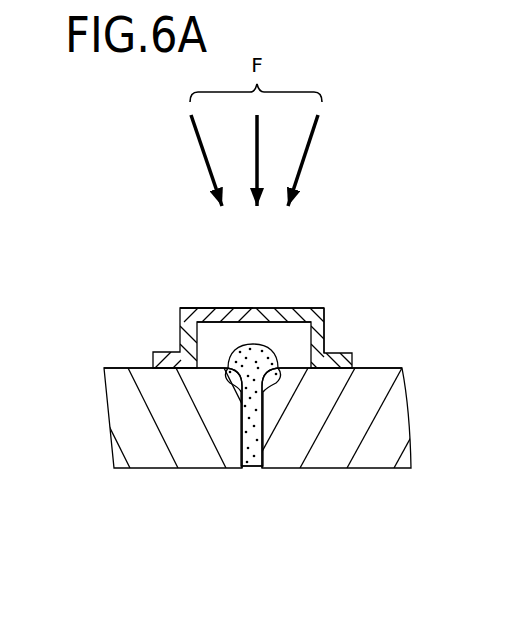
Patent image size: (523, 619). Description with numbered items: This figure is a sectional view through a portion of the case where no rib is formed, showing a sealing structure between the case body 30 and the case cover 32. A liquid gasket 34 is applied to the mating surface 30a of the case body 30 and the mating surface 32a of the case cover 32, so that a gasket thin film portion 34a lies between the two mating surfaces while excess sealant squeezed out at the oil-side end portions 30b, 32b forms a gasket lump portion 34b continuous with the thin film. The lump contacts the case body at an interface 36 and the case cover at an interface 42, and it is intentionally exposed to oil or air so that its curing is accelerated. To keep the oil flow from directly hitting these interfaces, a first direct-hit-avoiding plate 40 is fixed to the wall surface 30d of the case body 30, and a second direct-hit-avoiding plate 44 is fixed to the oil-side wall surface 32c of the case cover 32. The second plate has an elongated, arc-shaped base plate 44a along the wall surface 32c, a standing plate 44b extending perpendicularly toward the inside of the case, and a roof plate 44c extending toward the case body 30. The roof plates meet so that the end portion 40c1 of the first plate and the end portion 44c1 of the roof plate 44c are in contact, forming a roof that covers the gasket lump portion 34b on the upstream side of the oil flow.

The case body 30 is at (138, 515).
The mating surface of the case body 30a is at (242, 470).
The oil-side end portion of the mating surface of the case body 30b is at (241, 387).
The wall surface of the case body 30d is at (104, 368).
The case cover 32 is at (404, 490).
The mating surface of the case cover 32a is at (265, 387).
The oil-side end portion of the mating surface of the case cover 32b is at (286, 377).
The oil-side wall surface of the case cover 32c is at (391, 369).
The liquid gasket 34 is at (300, 308).
The gasket thin film portion 34a is at (248, 466).
The gasket lump portion 34b is at (268, 353).
The interface 36 is at (219, 389).
The first direct-hit-avoiding plate 40 is at (187, 302).
The end portion of the roof plate 40c1 is at (261, 310).
The interface 42 is at (286, 392).
The second direct-hit-avoiding plate 44 is at (283, 295).
The base plate 44a is at (353, 362).
The standing plate 44b is at (324, 327).
The roof plate 44c is at (277, 333).
The end portion of the roof plate 44c1 is at (249, 308).